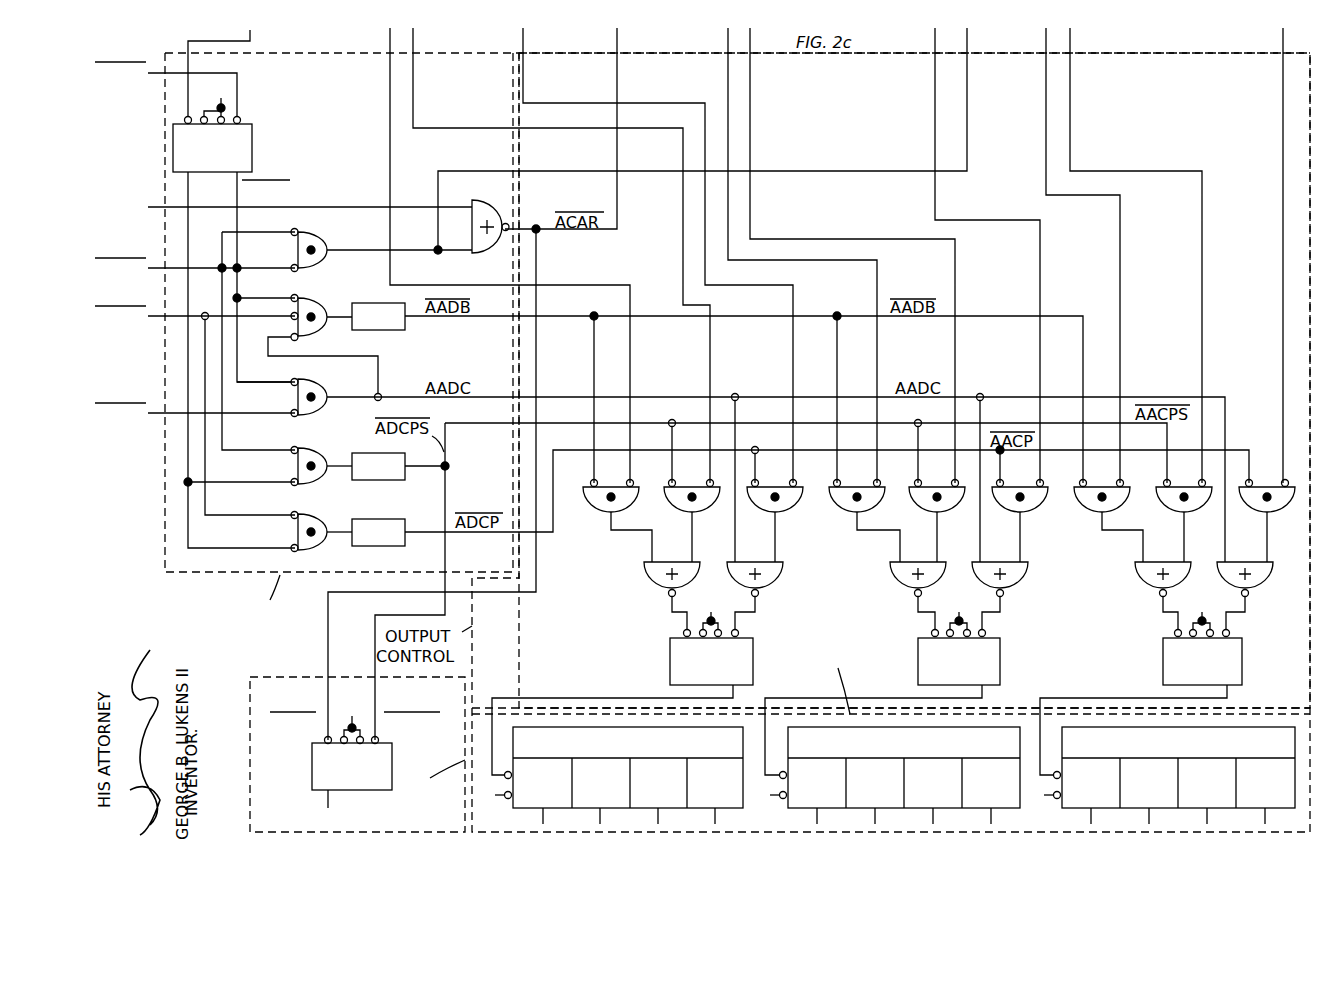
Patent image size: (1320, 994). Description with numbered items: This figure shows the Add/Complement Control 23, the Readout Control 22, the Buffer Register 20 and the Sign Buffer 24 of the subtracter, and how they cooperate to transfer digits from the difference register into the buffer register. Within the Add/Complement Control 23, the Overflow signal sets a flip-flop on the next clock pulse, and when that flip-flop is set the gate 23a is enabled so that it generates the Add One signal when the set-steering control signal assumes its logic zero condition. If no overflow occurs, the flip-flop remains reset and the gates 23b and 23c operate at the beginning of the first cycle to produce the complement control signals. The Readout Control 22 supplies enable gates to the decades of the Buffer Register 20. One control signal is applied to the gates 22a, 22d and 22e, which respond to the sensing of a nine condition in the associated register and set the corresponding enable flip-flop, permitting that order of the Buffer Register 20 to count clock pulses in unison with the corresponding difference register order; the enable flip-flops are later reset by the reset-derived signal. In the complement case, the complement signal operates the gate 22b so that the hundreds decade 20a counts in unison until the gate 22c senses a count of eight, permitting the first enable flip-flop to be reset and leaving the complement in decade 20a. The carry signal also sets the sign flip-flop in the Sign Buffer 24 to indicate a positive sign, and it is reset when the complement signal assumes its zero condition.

The buffer register 20 is at (812, 714).
The hundreds decade of buffer register 20a is at (637, 727).
The readout control 22 is at (1142, 53).
The gate 22a is at (585, 492).
The gate 22b is at (668, 492).
The gate 22c is at (800, 492).
The gate 22d is at (882, 492).
The gate 22e is at (1075, 492).
The add/complement control 23 is at (344, 54).
The gate 23a is at (318, 262).
The gate 23b is at (318, 524).
The gate 23c is at (318, 458).
The sign buffer 24 is at (345, 677).